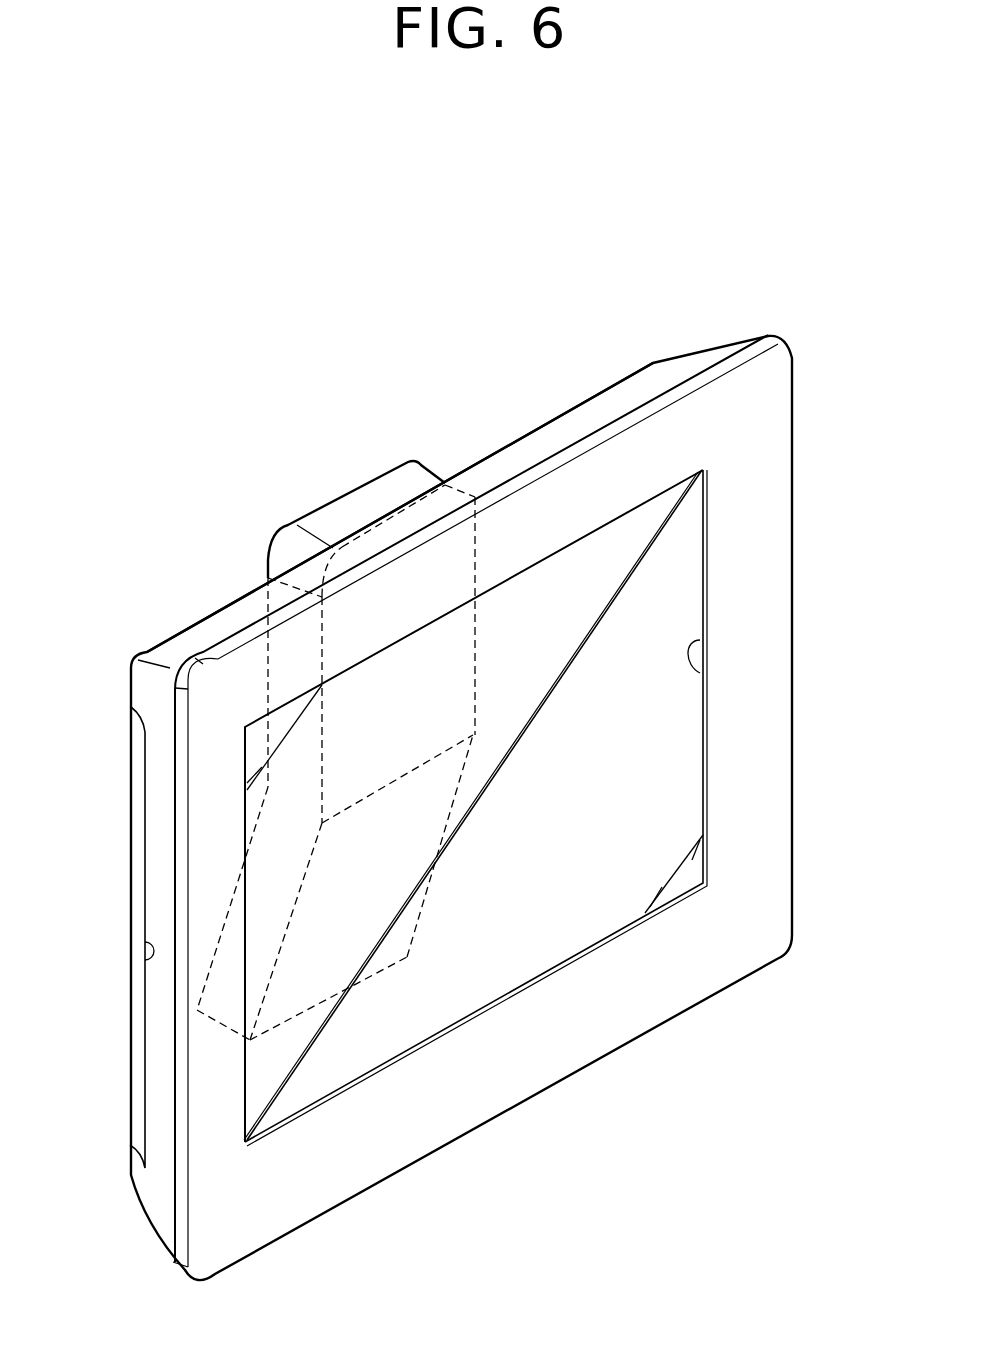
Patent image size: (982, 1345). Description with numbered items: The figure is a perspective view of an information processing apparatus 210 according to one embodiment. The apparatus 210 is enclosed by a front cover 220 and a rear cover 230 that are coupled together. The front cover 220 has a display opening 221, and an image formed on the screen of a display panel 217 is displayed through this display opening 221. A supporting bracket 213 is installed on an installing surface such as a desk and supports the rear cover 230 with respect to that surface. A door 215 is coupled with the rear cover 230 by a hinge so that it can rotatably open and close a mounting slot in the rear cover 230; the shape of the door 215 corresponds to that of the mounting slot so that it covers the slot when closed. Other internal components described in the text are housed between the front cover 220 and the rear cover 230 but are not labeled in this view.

The information processing apparatus 210 is at (177, 366).
The supporting bracket 213 is at (345, 495).
The door 215 is at (129, 778).
The display panel 217 is at (688, 557).
The front cover 220 is at (560, 458).
The display opening 221 is at (700, 673).
The rear cover 230 is at (218, 621).